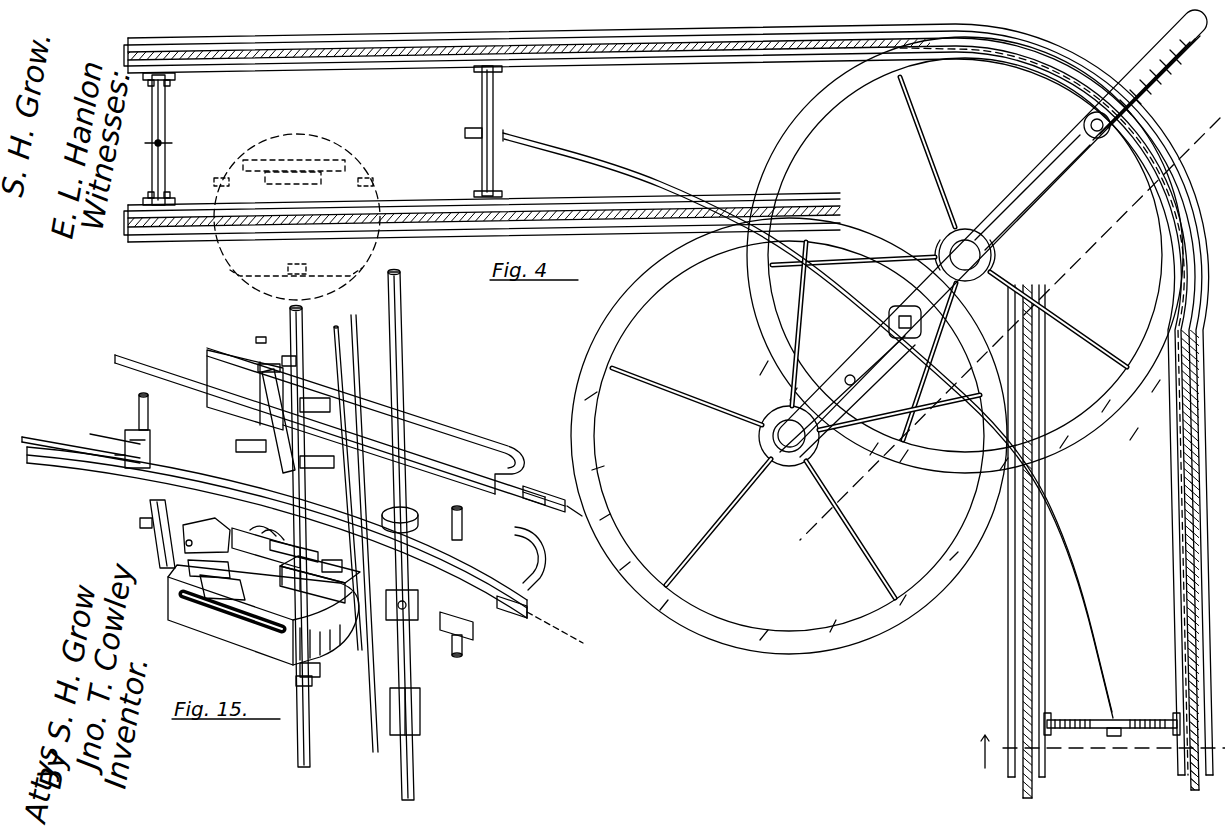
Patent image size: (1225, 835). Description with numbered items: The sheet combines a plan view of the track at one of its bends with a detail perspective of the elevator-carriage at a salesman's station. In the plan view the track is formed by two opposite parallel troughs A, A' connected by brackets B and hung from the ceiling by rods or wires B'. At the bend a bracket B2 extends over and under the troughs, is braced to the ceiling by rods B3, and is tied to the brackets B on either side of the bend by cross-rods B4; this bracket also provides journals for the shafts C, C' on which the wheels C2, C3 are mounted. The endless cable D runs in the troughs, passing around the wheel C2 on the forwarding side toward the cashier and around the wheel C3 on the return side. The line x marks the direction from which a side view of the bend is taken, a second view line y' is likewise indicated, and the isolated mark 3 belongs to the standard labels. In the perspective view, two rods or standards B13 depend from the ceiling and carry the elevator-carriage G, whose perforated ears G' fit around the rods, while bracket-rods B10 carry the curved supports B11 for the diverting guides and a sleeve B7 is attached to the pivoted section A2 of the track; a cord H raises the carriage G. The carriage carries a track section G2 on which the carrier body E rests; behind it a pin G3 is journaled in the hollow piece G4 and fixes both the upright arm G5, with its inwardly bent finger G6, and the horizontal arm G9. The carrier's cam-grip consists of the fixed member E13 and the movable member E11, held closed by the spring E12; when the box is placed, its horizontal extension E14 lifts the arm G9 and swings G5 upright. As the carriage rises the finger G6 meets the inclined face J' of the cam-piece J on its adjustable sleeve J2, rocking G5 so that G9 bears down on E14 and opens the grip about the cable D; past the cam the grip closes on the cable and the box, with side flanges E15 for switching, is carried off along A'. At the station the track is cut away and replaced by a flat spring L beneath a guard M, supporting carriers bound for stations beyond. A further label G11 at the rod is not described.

In FIG. 4, the trough A is at (584, 495).
In FIG. 15, the trough A is at (328, 433).
In FIG. 4, the trough A' is at (668, 402).
In FIG. 15, the trough A' is at (260, 537).
In FIG. 15, the pivoted section of the track A2 is at (277, 532).
In FIG. 4, the bracket B is at (661, 409).
In FIG. 4, the rod or wire B' is at (170, 132).
In FIG. 4, the bracket B2 is at (1160, 47).
In FIG. 4, the rod B3 is at (1084, 125).
In FIG. 4, the cross-rod B4 is at (808, 424).
In FIG. 15, the sleeve B7 is at (125, 440).
In FIG. 15, the bracket-rod B10 is at (139, 407).
In FIG. 15, the curved support B11 is at (540, 585).
In FIG. 15, the rod or standard B13 is at (293, 320).
In FIG. 4, the shaft C is at (965, 255).
In FIG. 4, the shaft C' is at (789, 436).
In FIG. 4, the wheel C2 is at (1058, 319).
In FIG. 4, the wheel C3 is at (718, 522).
In FIG. 15, the endless cord or cable D is at (555, 574).
In FIG. 4, the body of the cash-box E is at (289, 217).
In FIG. 15, the body of the cash-box E is at (248, 626).
In FIG. 15, the movable finger E11 is at (266, 547).
In FIG. 15, the spring E12 is at (283, 592).
In FIG. 15, the vertical fixed member E13 is at (294, 547).
In FIG. 15, the horizontal extension E14 is at (222, 587).
In FIG. 15, the flange E15 is at (182, 607).
In FIG. 15, the elevator-carriage G is at (380, 533).
In FIG. 15, the perforated ear G' is at (431, 671).
In FIG. 15, the section of track G2 is at (333, 566).
In FIG. 15, the pin G3 is at (158, 548).
In FIG. 15, the hollow piece G4 is at (206, 535).
In FIG. 15, the upright arm G5 is at (248, 437).
In FIG. 15, the right-angle finger G6 is at (290, 362).
In FIG. 15, the horizontal arm G9 is at (208, 568).
In FIG. 15, the collar G11 is at (298, 682).
In FIG. 15, the cord H is at (340, 362).
In FIG. 15, the cam-piece J is at (266, 404).
In FIG. 15, the upwardly-inclined side J' is at (317, 457).
In FIG. 15, the sleeve J2 is at (315, 401).
In FIG. 15, the flat spring L is at (225, 410).
In FIG. 15, the guard M is at (365, 421).
In FIG. 4, the line x x is at (1091, 751).
In FIG. 4, the section line y-y y' is at (1005, 331).
In FIG. 15, the part 3 is at (260, 334).